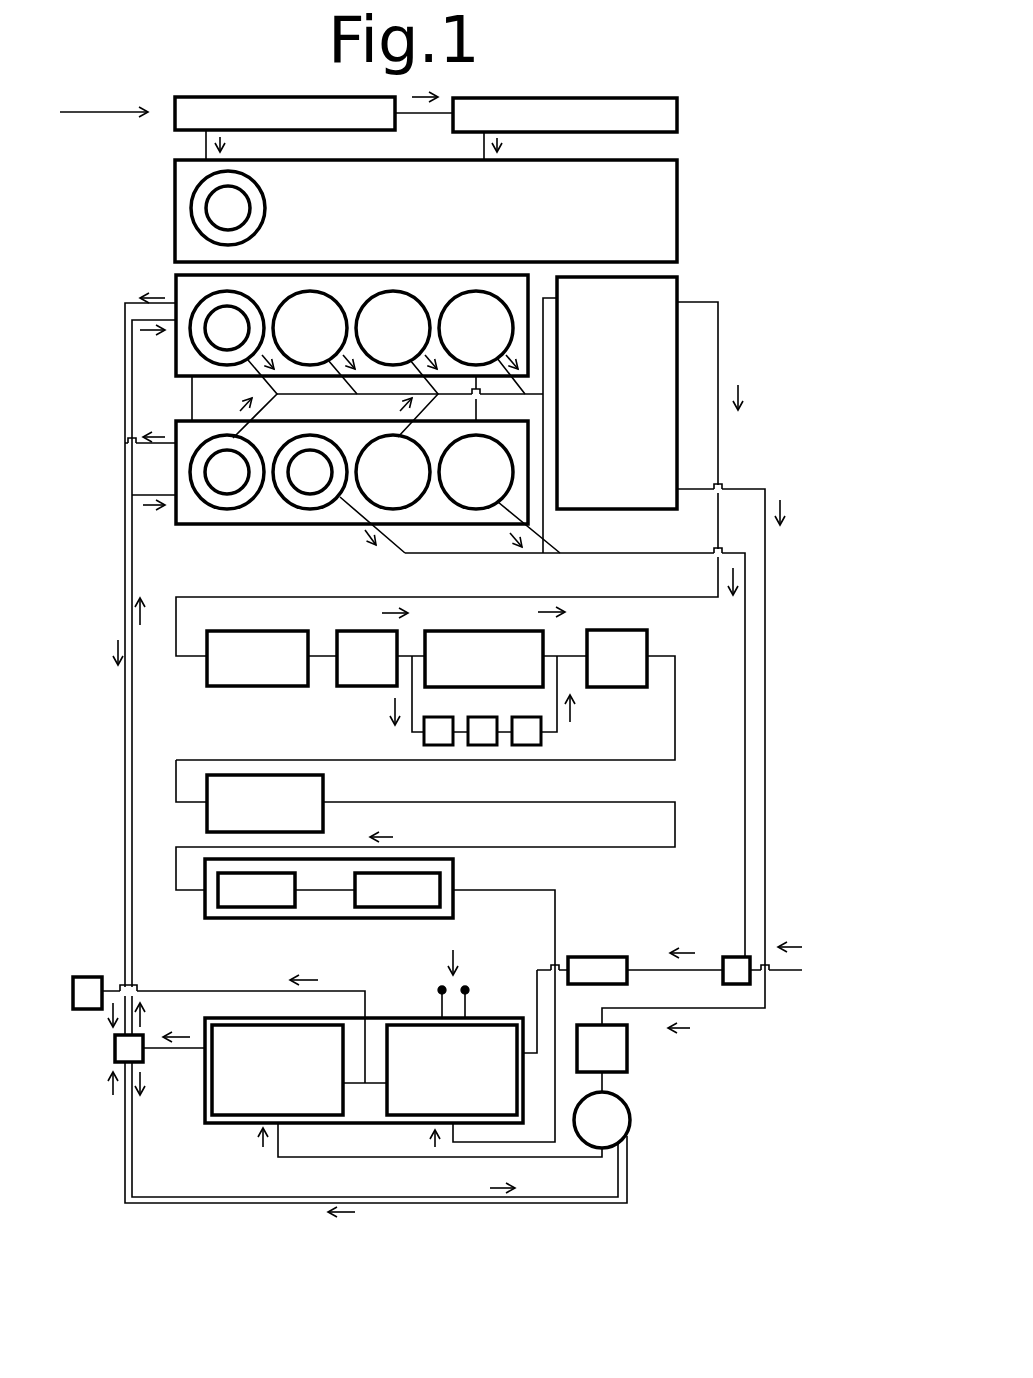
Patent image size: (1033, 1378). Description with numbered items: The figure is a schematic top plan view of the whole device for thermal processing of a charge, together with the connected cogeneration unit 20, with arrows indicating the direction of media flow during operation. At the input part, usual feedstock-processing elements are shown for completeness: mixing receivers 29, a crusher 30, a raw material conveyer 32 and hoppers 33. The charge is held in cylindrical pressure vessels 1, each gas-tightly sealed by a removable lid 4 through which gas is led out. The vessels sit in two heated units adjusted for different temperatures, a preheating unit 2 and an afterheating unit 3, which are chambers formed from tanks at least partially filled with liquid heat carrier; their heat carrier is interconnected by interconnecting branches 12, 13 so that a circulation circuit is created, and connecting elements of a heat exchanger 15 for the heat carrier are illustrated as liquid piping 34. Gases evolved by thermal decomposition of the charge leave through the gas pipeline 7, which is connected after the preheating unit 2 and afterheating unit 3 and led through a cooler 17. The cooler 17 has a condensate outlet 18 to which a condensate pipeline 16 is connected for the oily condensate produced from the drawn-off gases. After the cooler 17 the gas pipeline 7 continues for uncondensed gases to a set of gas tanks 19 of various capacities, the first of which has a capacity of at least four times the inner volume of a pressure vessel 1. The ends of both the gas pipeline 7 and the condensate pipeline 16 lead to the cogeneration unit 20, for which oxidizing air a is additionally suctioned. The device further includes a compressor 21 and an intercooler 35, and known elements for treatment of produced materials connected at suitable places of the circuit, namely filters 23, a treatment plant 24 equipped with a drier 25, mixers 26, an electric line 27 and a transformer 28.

The pressure vessel 1 is at (265, 208).
The preheating unit 2 is at (205, 526).
The afterheating unit 3 is at (176, 362).
The removable lid 4 is at (236, 215).
The gas pipeline 7 is at (733, 316).
The interconnecting branch 12 is at (192, 400).
The interconnecting branch 13 is at (476, 402).
The heat exchanger 15 is at (628, 1120).
The condensate pipeline 16 is at (730, 458).
The cooler 17 is at (668, 292).
The condensate outlet 18 is at (682, 497).
The gas tank 19 is at (272, 688).
The cogeneration unit 20 is at (222, 1123).
The compressor 21 is at (352, 688).
The filter 23 is at (392, 905).
The treatment plant 24 is at (308, 908).
The drier 25 is at (238, 905).
The mixer 26 is at (742, 958).
The electric line 27 is at (220, 990).
The transformer 28 is at (75, 977).
The mixing receiver 29 is at (175, 115).
The crusher 30 is at (677, 210).
The raw material conveyer 32 is at (452, 114).
The hopper 33 is at (203, 140).
The liquid piping 34 is at (132, 560).
The intercooler 35 is at (600, 930).
The oxidizing air a is at (790, 963).